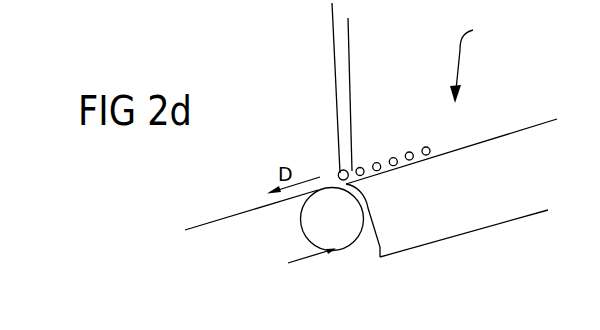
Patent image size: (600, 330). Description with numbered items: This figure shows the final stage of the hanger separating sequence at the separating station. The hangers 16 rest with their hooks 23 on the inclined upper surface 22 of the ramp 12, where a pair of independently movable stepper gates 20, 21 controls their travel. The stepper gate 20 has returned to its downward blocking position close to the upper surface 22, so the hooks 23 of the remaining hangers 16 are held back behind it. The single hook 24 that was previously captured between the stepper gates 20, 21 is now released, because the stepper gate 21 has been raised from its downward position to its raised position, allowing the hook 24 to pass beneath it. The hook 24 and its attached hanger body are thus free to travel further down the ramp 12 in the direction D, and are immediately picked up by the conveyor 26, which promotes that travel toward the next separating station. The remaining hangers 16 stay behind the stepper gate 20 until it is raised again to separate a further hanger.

The ramp 12 is at (500, 203).
The hanger 16 is at (476, 61).
The stepper gate 20 is at (349, 48).
The stepper gate 21 is at (332, 33).
The upper surface 22 is at (492, 135).
The hook 23 is at (359, 167).
The hook 24 is at (341, 170).
The conveyor 26 is at (248, 232).